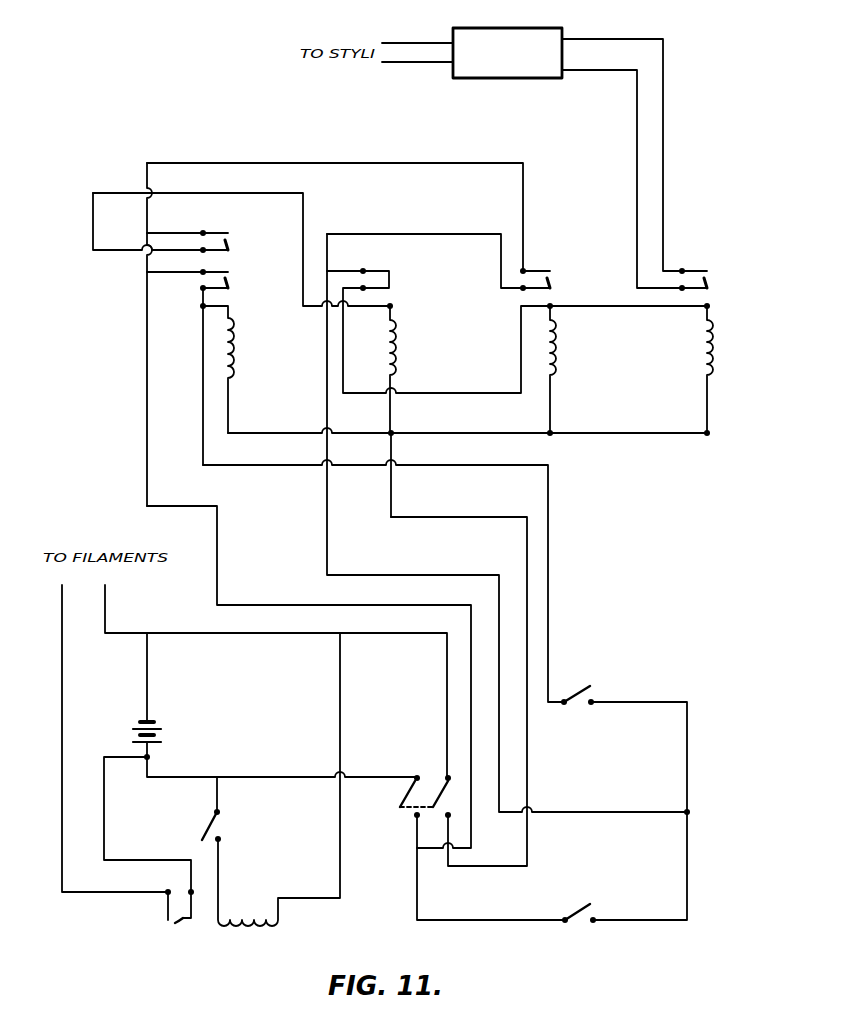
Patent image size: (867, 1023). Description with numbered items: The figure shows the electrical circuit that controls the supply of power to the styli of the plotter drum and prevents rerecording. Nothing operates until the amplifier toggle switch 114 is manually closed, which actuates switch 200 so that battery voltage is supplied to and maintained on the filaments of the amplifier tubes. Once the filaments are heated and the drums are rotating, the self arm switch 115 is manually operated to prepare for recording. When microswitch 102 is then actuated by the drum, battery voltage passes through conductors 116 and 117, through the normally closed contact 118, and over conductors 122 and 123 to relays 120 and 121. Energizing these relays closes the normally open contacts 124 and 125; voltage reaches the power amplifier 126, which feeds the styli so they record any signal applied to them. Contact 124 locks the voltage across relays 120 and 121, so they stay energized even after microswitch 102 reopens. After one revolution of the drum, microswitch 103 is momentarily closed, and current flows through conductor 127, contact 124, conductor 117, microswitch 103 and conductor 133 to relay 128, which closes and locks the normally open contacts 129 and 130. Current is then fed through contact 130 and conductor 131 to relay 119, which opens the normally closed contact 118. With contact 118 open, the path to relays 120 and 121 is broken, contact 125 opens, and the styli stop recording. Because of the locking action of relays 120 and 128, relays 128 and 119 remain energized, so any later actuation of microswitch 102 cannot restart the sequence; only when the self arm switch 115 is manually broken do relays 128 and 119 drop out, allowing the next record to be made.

The power amplifier 126 is at (523, 78).
The conductor 131 is at (305, 208).
The normally open contact 130 is at (231, 245).
The normally open contact 129 is at (230, 283).
The relay 128 is at (235, 340).
The normally closed contact 118 is at (389, 278).
The relay 119 is at (394, 345).
The normally open contact 124 is at (553, 278).
The normally open contact 125 is at (710, 278).
The relay 120 is at (555, 343).
The relay 121 is at (712, 343).
The conductor 122 is at (445, 433).
The conductor 133 is at (548, 575).
The conductor 117 is at (327, 528).
The conductor 127 is at (276, 605).
The conductor 123 is at (491, 866).
The microswitch 103 is at (593, 686).
The microswitch 102 is at (591, 911).
The conductor 116 is at (495, 920).
The self arm switch 115 is at (424, 797).
The amplifier toggle switch 114 is at (222, 830).
The switch 200 is at (178, 918).